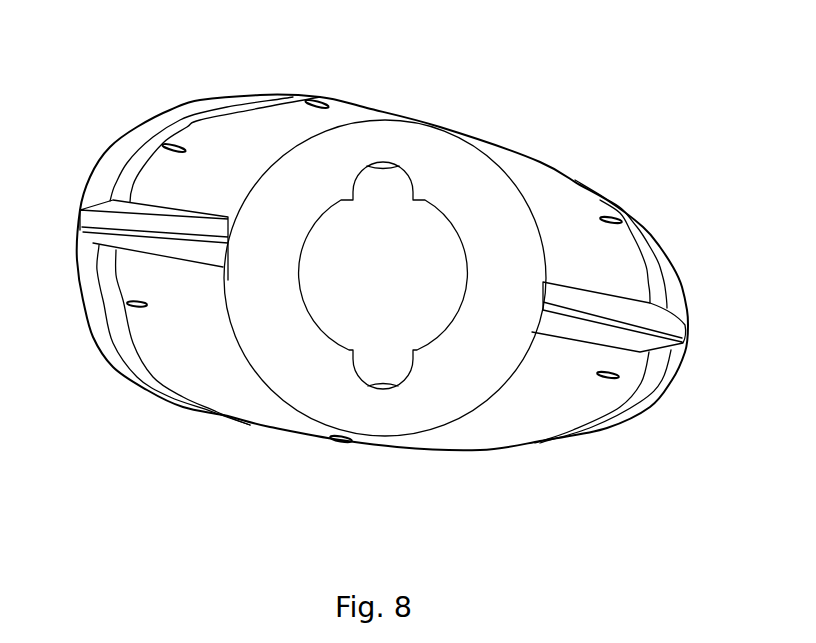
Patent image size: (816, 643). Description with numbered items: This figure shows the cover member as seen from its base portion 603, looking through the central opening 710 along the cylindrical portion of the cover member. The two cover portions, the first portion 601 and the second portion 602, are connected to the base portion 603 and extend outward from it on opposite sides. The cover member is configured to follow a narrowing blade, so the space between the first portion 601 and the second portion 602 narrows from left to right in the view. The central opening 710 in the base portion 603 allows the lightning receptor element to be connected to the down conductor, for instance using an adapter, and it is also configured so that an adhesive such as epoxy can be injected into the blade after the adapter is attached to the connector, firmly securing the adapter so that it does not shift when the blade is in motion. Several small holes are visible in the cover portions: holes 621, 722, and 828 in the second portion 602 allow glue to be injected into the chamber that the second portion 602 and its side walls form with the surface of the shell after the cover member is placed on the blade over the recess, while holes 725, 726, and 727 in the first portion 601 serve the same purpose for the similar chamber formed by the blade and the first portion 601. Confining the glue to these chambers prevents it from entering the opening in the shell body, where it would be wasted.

The first cover portion 601 is at (517, 162).
The second cover portion 602 is at (523, 420).
The base portion 603 is at (400, 412).
The central opening 710 is at (352, 297).
The hole 621 is at (340, 443).
The hole 722 is at (136, 309).
The hole 725 is at (612, 218).
The hole 726 is at (318, 99).
The hole 727 is at (173, 143).
The hole 828 is at (616, 380).